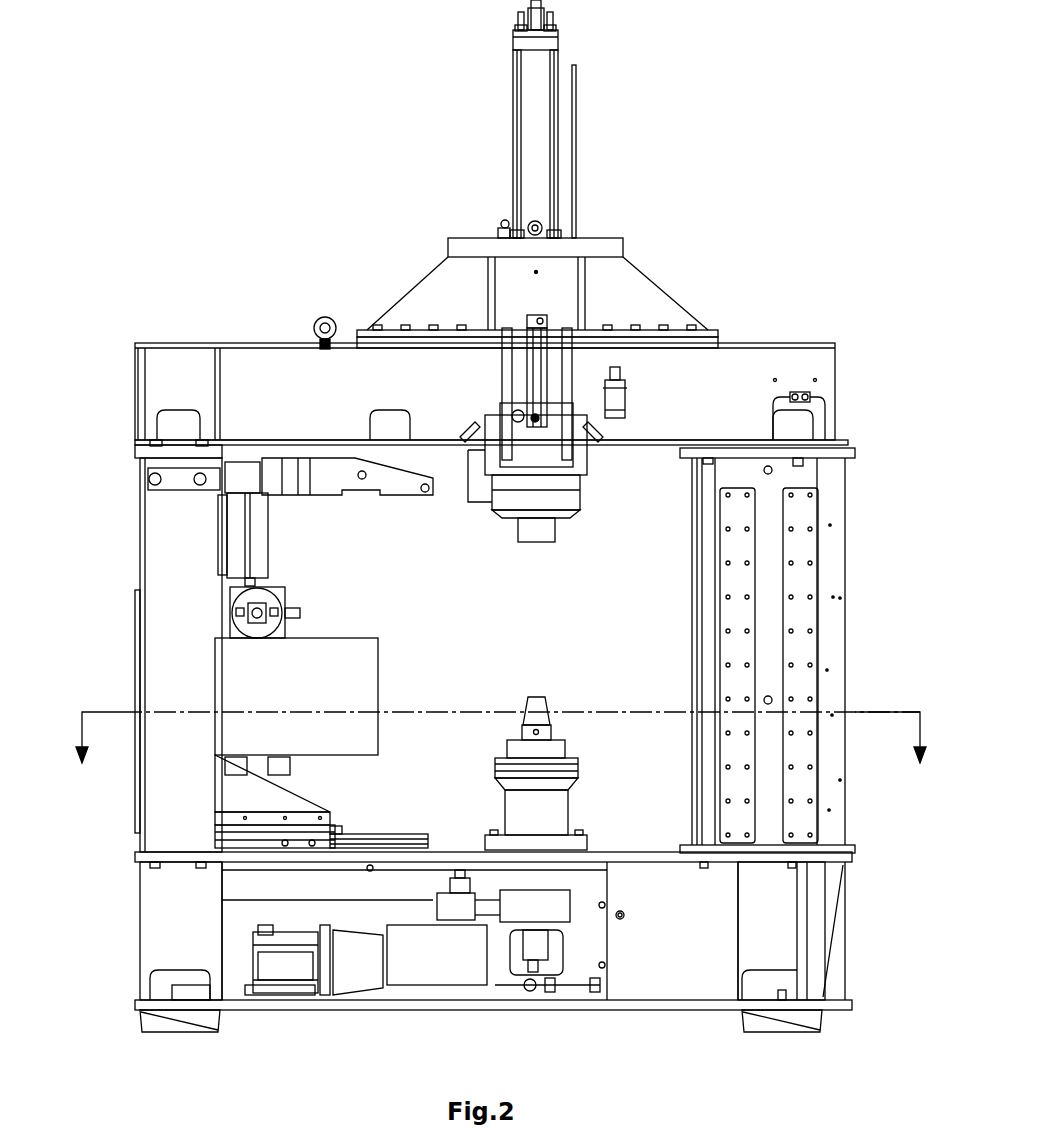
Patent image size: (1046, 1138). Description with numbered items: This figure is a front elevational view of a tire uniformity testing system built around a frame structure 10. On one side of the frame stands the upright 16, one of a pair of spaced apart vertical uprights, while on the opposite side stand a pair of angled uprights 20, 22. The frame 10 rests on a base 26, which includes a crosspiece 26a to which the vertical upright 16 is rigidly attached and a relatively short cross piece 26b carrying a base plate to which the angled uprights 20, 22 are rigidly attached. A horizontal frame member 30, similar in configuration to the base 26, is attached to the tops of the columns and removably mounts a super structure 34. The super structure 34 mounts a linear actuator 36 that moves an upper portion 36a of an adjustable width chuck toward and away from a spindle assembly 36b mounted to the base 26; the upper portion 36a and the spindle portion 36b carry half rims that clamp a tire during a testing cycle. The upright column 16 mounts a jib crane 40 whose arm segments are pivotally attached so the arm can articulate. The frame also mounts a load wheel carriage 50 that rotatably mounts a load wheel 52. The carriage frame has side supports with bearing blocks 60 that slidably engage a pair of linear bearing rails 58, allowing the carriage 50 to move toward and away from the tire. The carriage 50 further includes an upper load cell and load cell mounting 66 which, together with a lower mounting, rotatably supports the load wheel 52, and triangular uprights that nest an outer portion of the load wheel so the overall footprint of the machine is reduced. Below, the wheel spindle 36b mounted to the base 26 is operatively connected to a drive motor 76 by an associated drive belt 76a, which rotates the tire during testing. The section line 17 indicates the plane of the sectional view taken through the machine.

The frame structure 10 is at (830, 305).
The upright 16 is at (172, 566).
The section line 17 is at (503, 752).
The angled upright 20 is at (832, 512).
The angled upright 22 is at (808, 768).
The base 26 is at (667, 967).
The crosspiece 26a is at (162, 910).
The cross piece 26b is at (780, 942).
The horizontal frame member 30 is at (258, 343).
The super structure 34 is at (683, 296).
The linear actuator 36 is at (530, 130).
The upper portion of adjustable width chuck 36a is at (562, 515).
The spindle assembly 36b is at (570, 753).
The jib crane 40 is at (335, 508).
The load wheel carriage 50 is at (333, 795).
The load wheel 52 is at (343, 683).
The linear bearing rails 58 is at (420, 838).
The bearing blocks 60 is at (337, 833).
The upper load cell and load cell mounting 66 is at (283, 612).
The drive motor 76 is at (366, 960).
The drive belt 76a is at (545, 912).